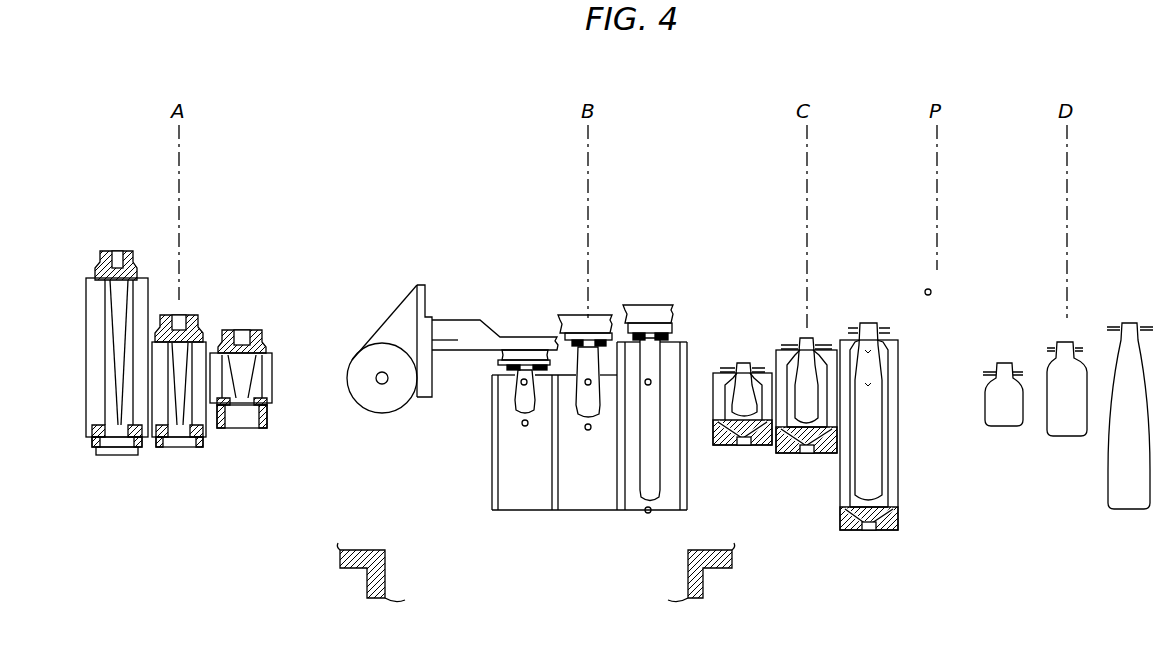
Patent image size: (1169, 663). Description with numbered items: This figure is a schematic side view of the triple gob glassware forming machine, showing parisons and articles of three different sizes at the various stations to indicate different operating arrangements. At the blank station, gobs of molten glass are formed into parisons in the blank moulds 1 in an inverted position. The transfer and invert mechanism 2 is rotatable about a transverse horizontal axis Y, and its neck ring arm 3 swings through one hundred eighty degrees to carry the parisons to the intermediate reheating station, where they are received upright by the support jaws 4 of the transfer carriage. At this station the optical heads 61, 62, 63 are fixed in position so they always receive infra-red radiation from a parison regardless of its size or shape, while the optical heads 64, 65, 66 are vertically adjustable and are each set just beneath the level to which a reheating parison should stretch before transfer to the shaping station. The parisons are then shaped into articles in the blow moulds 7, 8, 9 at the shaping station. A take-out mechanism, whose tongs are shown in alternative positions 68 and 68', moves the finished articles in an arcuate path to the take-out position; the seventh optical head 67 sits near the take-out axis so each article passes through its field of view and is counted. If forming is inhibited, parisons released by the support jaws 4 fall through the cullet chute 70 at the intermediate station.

The blank mould 1 is at (140, 295).
The transfer and invert mechanism 2 is at (382, 361).
The transverse horizontal axis Y is at (381, 385).
The neck ring arm 3 is at (500, 340).
The support jaws 4 is at (497, 367).
The optical head 61 is at (521, 383).
The optical head 62 is at (586, 385).
The optical head 63 is at (651, 380).
The optical head 64 is at (524, 426).
The optical head 65 is at (590, 430).
The optical head 66 is at (649, 513).
The optical head 67 is at (926, 290).
The take-out tongs position 68 is at (805, 392).
The take-out tongs position 68' is at (1059, 396).
The blow mould 7 is at (720, 413).
The blow mould 8 is at (782, 420).
The blow mould 9 is at (845, 475).
The cullet chute 70 is at (475, 551).